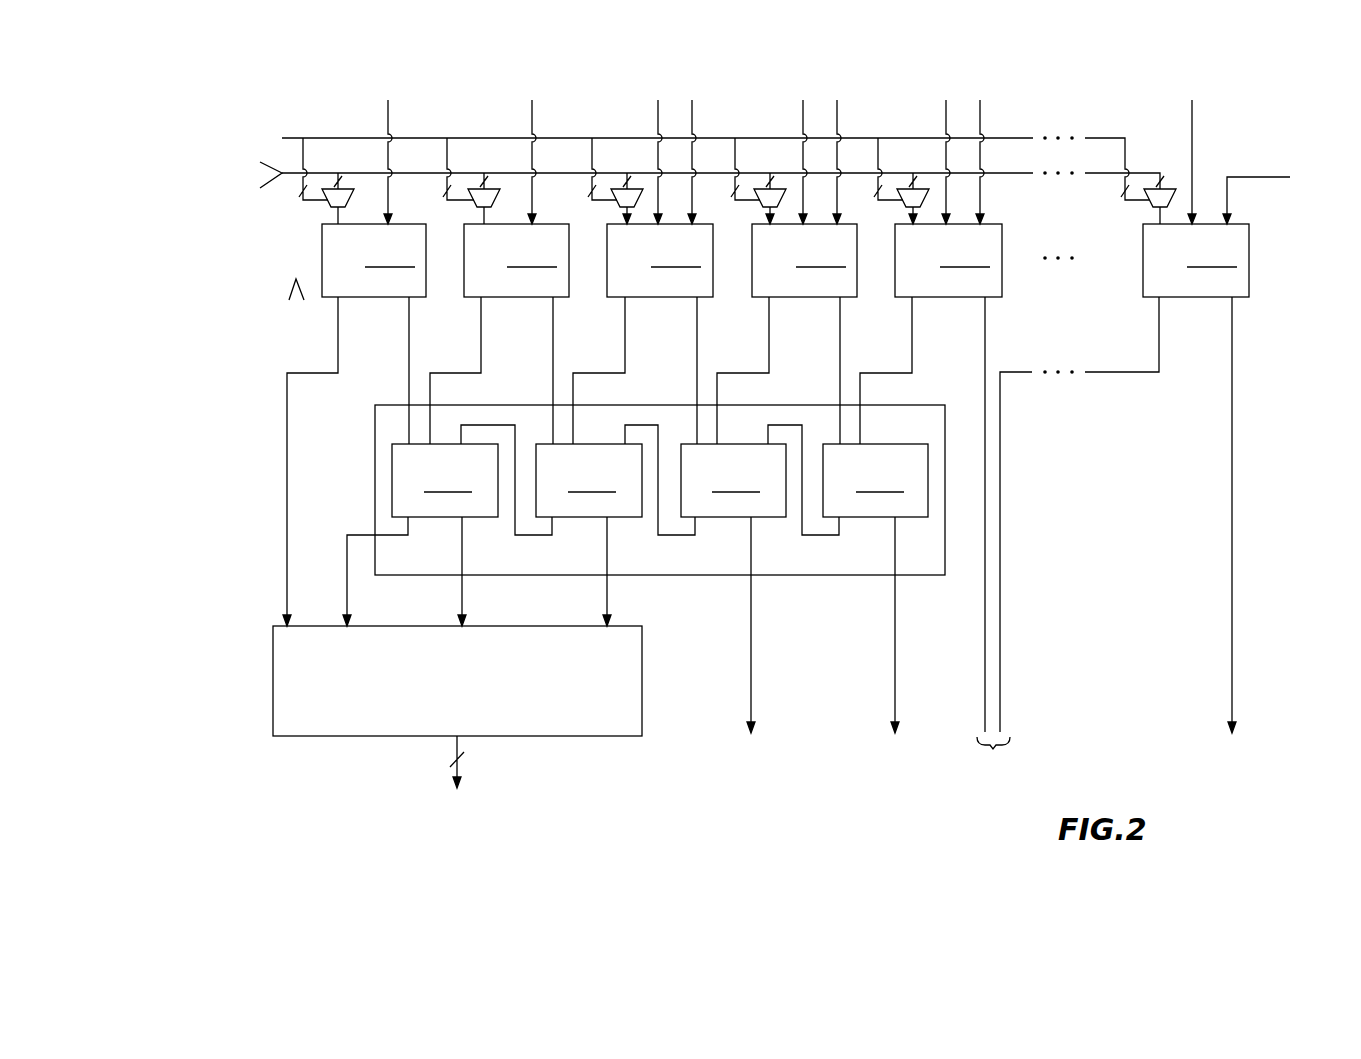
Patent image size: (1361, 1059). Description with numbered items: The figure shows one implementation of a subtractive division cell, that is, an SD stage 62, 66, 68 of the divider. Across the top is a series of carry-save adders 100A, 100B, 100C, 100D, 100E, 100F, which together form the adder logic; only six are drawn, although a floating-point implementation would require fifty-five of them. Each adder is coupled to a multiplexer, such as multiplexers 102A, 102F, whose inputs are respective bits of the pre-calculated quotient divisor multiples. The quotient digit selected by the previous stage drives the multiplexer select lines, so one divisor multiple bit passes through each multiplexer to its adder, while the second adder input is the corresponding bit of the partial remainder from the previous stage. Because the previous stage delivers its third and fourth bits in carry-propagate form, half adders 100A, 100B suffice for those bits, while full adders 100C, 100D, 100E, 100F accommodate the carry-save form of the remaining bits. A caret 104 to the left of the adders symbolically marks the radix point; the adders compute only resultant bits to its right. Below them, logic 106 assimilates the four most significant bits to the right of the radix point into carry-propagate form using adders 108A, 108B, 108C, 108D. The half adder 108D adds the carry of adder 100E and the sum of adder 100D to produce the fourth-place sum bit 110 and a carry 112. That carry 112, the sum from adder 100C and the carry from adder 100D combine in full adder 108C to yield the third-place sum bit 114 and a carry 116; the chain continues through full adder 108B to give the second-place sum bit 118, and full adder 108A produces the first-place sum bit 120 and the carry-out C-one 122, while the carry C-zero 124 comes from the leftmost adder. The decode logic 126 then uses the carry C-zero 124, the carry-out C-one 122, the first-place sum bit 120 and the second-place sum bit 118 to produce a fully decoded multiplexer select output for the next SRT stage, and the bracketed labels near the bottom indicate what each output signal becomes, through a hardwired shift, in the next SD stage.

The SD stage 62 is at (708, 454).
The SD stage 66 is at (708, 454).
The SD stage 68 is at (1259, 102).
The half adder 100A is at (374, 260).
The half adder 100B is at (516, 260).
The full adder 100C is at (660, 260).
The full adder 100D is at (804, 260).
The full adder 100E is at (948, 260).
The full adder 100F is at (1196, 260).
The multiplexer 102A is at (330, 208).
The multiplexer 102F is at (1150, 200).
The caret 104 is at (276, 316).
The logic 106 is at (375, 425).
The full adder 108A is at (445, 480).
The full adder 108B is at (589, 480).
The full adder 108C is at (733, 480).
The half adder 108D is at (875, 480).
The sum R^-4 110 is at (895, 642).
The carry 112 is at (808, 537).
The sum R^-3 114 is at (752, 625).
The carry 116 is at (672, 537).
The sum R^-2 118 is at (607, 592).
The sum R^-1 120 is at (540, 537).
The carry-out C1 122 is at (348, 592).
The carry C0 124 is at (287, 562).
The decode logic 126 is at (273, 684).